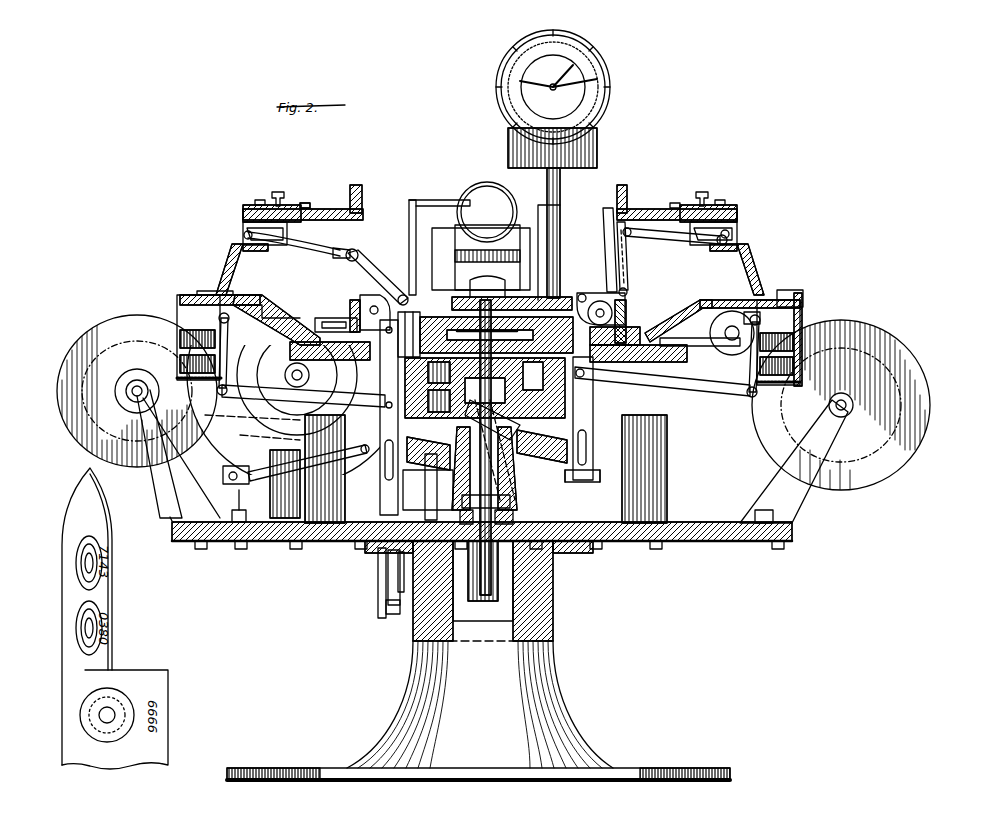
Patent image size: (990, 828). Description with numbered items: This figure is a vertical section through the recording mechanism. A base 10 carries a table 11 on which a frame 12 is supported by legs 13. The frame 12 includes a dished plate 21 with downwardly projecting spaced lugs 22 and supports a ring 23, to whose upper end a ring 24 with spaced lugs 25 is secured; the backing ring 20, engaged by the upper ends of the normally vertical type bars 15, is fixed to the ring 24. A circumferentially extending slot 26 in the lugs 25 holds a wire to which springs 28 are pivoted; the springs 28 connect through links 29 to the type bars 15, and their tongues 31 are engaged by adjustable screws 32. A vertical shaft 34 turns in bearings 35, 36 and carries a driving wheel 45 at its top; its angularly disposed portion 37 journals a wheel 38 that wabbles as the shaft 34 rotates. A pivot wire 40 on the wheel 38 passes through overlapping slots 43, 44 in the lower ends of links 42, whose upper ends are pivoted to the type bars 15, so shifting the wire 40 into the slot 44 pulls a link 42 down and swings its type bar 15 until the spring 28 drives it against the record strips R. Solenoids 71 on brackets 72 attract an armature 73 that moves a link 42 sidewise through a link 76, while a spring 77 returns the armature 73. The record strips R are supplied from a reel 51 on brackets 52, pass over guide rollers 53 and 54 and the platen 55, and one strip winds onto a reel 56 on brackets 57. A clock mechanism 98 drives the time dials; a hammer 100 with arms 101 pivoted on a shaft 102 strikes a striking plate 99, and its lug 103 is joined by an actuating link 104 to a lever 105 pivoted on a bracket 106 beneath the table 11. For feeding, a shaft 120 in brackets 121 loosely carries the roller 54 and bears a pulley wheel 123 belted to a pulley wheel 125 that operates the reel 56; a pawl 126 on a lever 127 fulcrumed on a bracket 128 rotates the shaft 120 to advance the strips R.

The base 10 is at (490, 732).
The table 11 is at (708, 543).
The frame 12 is at (680, 348).
The legs 13 is at (310, 503).
The type bars 15 is at (607, 236).
The backing ring 20 is at (356, 185).
The dished plate 21 is at (725, 300).
The spaced lugs 22 is at (195, 293).
The ring 23 is at (228, 262).
The ring 24 is at (268, 206).
The spaced lugs 25 is at (243, 236).
The circumferentially extending slot 26 is at (245, 226).
The springs 28 is at (660, 230).
The links 29 is at (628, 274).
The tongues 31 is at (305, 205).
The adjustable screws 32 is at (279, 190).
The vertical shaft 34 is at (493, 582).
The bearing 35 is at (519, 503).
The bearing 36 is at (567, 385).
The angularly disposed portion 37 is at (512, 458).
The wheel 38 is at (432, 470).
The pivot wire 40 is at (385, 462).
The links 42 is at (310, 373).
The slot 43 is at (590, 472).
The slot 44 is at (586, 428).
The driving wheel 45 is at (545, 422).
The reel 51 is at (868, 466).
The brackets 52 is at (800, 500).
The guide roller 53 is at (705, 318).
The guide roller 54 is at (280, 298).
The platen 55 is at (455, 316).
The reel 56 is at (70, 362).
The brackets 57 is at (166, 488).
The solenoids 71 is at (182, 330).
The brackets 72 is at (803, 305).
The armature 73 is at (752, 398).
The link 76 is at (260, 388).
The spring 77 is at (782, 388).
The clock mechanism 98 is at (513, 64).
The striking plate 99 is at (480, 282).
The hammer 100 is at (470, 194).
The arms 101 is at (430, 232).
The shaft 102 is at (410, 262).
The lug 103 is at (426, 204).
The actuating link 104 is at (372, 236).
The lever 105 is at (392, 614).
The bracket 106 is at (378, 578).
The shaft 120 is at (300, 318).
The brackets 121 is at (272, 440).
The pulley wheel 123 is at (255, 412).
The pulley wheel 125 is at (118, 345).
The pawl 126 is at (350, 456).
The lever 127 is at (258, 468).
The bracket 128 is at (241, 542).
The record strips R is at (360, 318).